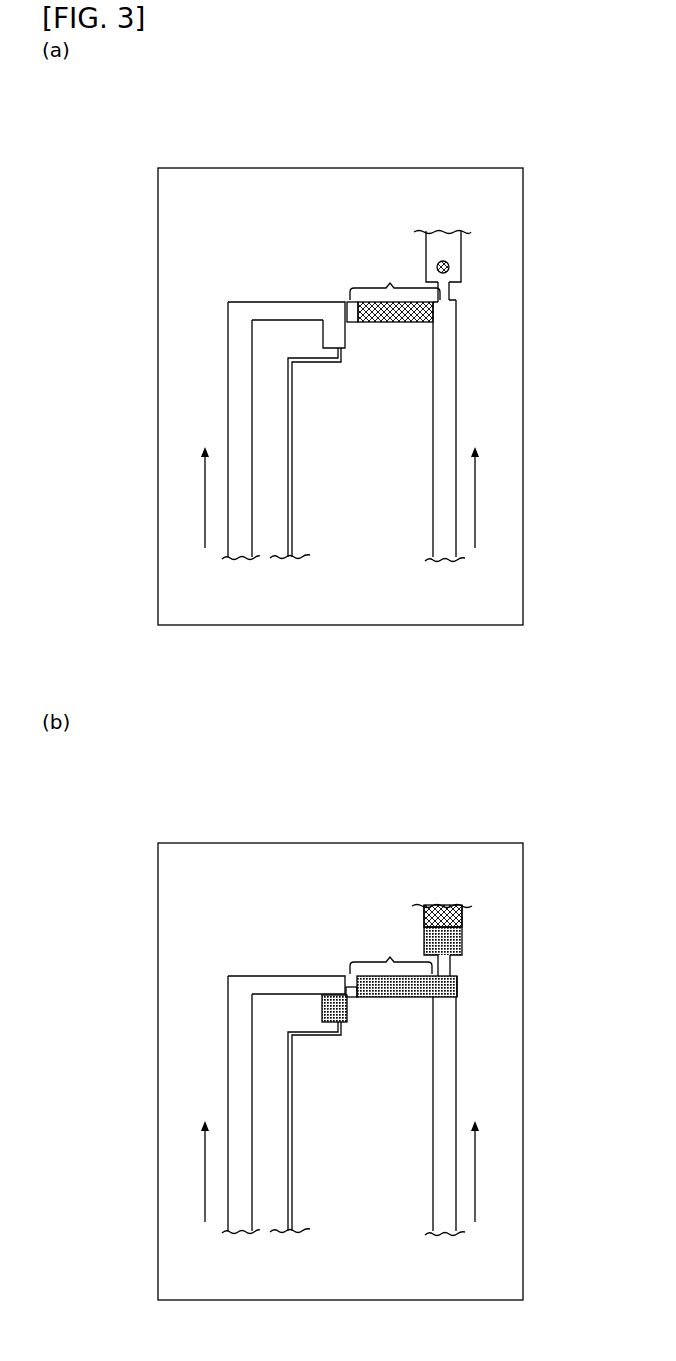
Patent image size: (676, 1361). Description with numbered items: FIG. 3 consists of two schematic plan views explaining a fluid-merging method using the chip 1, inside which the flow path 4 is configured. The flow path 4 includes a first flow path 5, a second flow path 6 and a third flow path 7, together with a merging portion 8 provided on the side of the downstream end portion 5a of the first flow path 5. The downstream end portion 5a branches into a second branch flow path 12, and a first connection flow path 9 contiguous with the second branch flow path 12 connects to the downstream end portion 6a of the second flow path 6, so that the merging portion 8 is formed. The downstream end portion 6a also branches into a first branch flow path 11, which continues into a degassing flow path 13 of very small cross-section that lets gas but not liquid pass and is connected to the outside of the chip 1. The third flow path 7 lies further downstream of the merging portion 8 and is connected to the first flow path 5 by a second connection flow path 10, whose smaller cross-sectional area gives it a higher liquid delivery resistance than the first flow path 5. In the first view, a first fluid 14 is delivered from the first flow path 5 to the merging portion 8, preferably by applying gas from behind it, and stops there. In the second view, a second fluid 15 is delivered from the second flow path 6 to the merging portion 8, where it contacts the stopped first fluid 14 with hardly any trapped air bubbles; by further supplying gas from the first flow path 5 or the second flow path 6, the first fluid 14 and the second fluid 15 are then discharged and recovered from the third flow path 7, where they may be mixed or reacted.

The chip 1 is at (214, 163).
The flow path 4 is at (231, 724).
The first flow path 5 is at (462, 768).
The downstream end portion of the first flow path 5a is at (456, 315).
The second flow path 6 is at (228, 398).
The downstream end portion of the second flow path 6a is at (336, 300).
The third flow path 7 is at (461, 253).
The merging portion 8 is at (395, 615).
The first connection flow path 9 is at (352, 323).
The second connection flow path 10 is at (449, 290).
The first branch flow path 11 is at (323, 331).
The second branch flow path 12 is at (368, 323).
The degassing flow path 13 is at (292, 445).
The first fluid 14 is at (443, 260).
The second fluid 15 is at (405, 998).